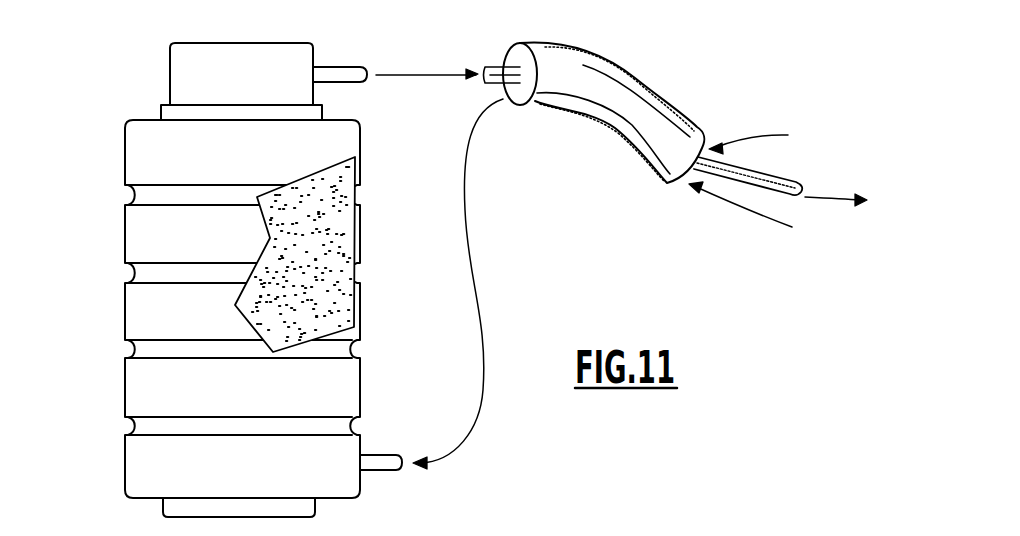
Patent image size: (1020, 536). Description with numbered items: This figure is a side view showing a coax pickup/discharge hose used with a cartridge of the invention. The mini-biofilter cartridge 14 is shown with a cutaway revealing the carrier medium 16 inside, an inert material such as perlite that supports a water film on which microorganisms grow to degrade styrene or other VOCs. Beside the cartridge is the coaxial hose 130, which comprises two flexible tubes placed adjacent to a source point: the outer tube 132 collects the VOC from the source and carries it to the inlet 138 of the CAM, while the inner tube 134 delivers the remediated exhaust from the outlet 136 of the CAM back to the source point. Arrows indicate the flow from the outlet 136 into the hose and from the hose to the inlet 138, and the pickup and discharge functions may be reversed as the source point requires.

The mini-biofilter cartridge 14 is at (133, 303).
The carrier medium 16 is at (330, 223).
The coaxial hose 130 is at (611, 95).
The outer tube 132 is at (608, 125).
The inner tube 134 is at (783, 178).
The outlet 136 is at (347, 67).
The inlet 138 is at (384, 467).